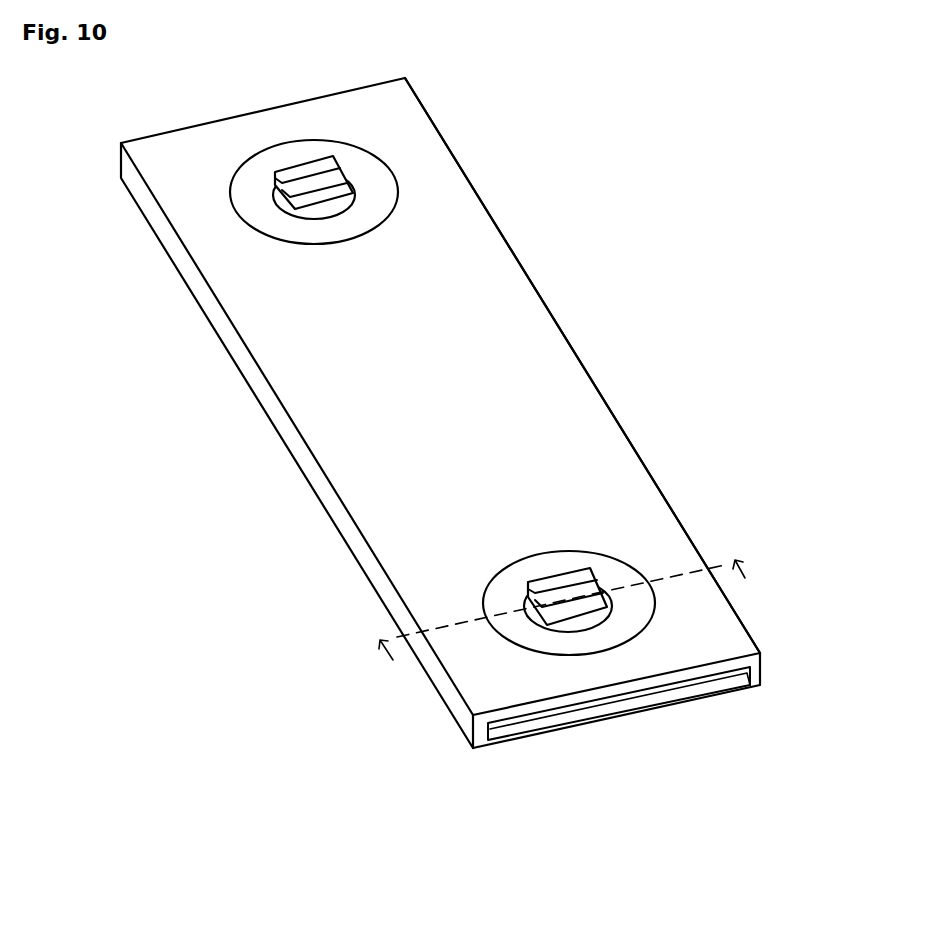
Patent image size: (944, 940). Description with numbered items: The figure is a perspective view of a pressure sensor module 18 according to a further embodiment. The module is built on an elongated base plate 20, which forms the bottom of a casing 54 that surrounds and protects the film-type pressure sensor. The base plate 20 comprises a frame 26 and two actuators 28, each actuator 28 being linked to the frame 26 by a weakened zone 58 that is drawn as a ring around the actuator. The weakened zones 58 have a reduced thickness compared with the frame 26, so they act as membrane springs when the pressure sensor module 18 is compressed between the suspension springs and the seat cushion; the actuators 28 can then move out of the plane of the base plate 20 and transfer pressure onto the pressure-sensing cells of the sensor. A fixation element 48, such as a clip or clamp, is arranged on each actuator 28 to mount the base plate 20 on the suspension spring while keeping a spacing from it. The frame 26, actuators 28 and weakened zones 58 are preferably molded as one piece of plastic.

The pressure sensor module 18 is at (553, 195).
The base plate 20 is at (527, 263).
The frame 26 is at (555, 363).
The actuator 28 is at (330, 213).
The fixation element 48 is at (320, 162).
The casing 54 is at (688, 702).
The weakened zone 58 is at (370, 173).